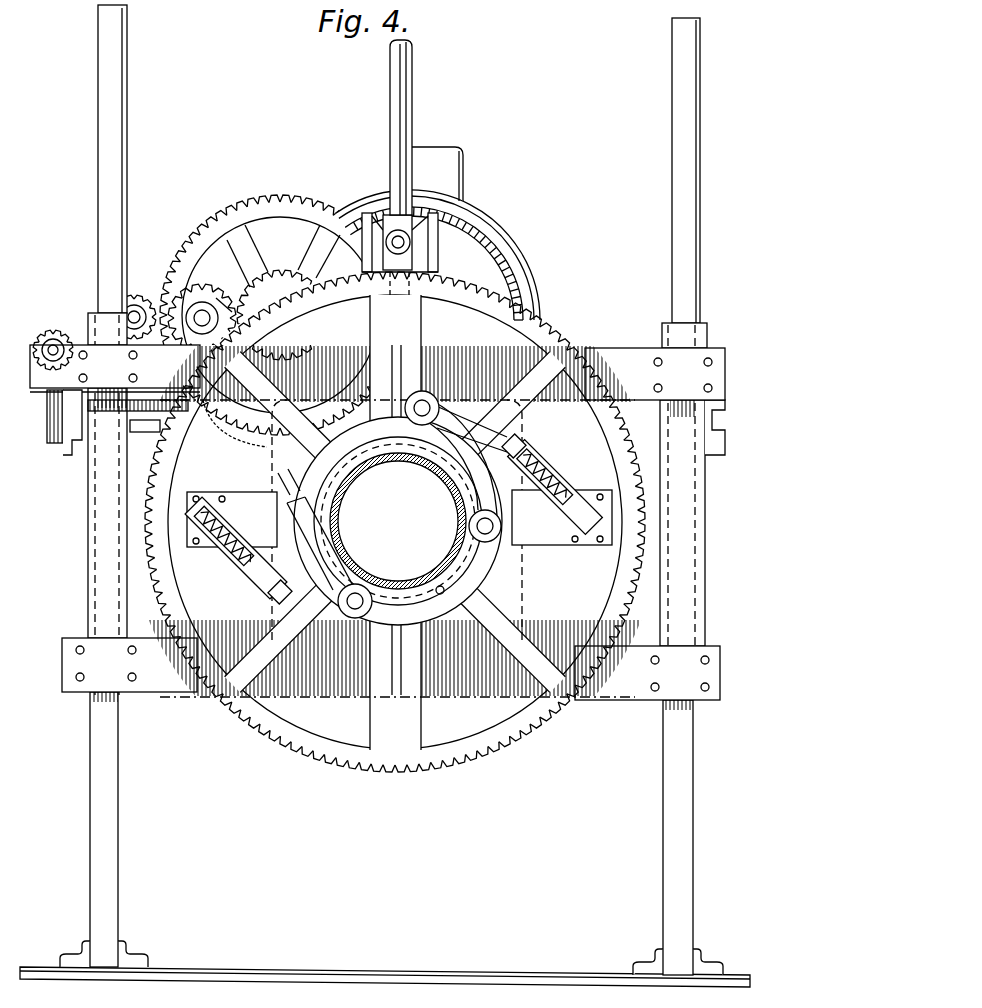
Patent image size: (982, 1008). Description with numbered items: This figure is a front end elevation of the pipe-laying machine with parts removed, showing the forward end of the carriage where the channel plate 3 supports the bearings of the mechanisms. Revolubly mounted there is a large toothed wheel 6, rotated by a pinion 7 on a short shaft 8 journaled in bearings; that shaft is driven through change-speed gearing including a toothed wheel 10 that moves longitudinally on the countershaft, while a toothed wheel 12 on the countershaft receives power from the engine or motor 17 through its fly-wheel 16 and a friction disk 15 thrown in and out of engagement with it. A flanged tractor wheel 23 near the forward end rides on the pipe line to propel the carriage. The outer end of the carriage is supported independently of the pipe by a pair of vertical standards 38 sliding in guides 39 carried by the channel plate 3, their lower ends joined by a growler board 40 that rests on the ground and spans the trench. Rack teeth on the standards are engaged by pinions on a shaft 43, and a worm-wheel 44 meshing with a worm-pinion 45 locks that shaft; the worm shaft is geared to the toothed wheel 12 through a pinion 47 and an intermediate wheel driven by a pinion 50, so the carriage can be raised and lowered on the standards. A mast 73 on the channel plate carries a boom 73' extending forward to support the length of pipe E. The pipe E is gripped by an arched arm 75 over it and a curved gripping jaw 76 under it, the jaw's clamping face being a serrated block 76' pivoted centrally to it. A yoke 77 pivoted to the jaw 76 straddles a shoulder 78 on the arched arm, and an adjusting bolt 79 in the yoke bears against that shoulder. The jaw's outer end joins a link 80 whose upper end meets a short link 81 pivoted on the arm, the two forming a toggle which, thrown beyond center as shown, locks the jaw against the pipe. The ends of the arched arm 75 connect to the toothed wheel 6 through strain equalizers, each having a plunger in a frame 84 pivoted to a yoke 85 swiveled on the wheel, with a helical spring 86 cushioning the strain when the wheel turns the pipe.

The channel plate 3 is at (600, 350).
The toothed wheel 6 is at (558, 333).
The pinion 7 is at (203, 300).
The short shaft 8 is at (224, 294).
The toothed wheel 10 is at (270, 278).
The toothed wheel 12 is at (264, 199).
The friction disk 15 is at (503, 236).
The fly-wheel 16 is at (480, 214).
The engine or motor 17 is at (431, 152).
The tractor wheel 23 is at (426, 257).
The vertical standards 38 is at (112, 829).
The guides 39 is at (88, 503).
The growler board 40 is at (380, 974).
The shaft 43 is at (145, 434).
The worm-wheel 44 is at (48, 405).
The worm-pinion 45 is at (45, 343).
The pinion 47 is at (58, 335).
The pinion 50 is at (137, 300).
The mast 73 is at (409, 185).
The boom 73' is at (413, 218).
The arched arm 75 is at (358, 452).
The curved gripping jaw 76 is at (422, 521).
The block 76' is at (432, 567).
The yoke 77 is at (342, 582).
The shoulder 78 is at (286, 510).
The adjusting bolt 79 is at (280, 476).
The link 80 is at (470, 491).
The short link 81 is at (447, 441).
The frame 84 is at (393, 519).
The yoke 85 is at (399, 521).
The helical spring 86 is at (262, 590).
The pipe E is at (338, 546).